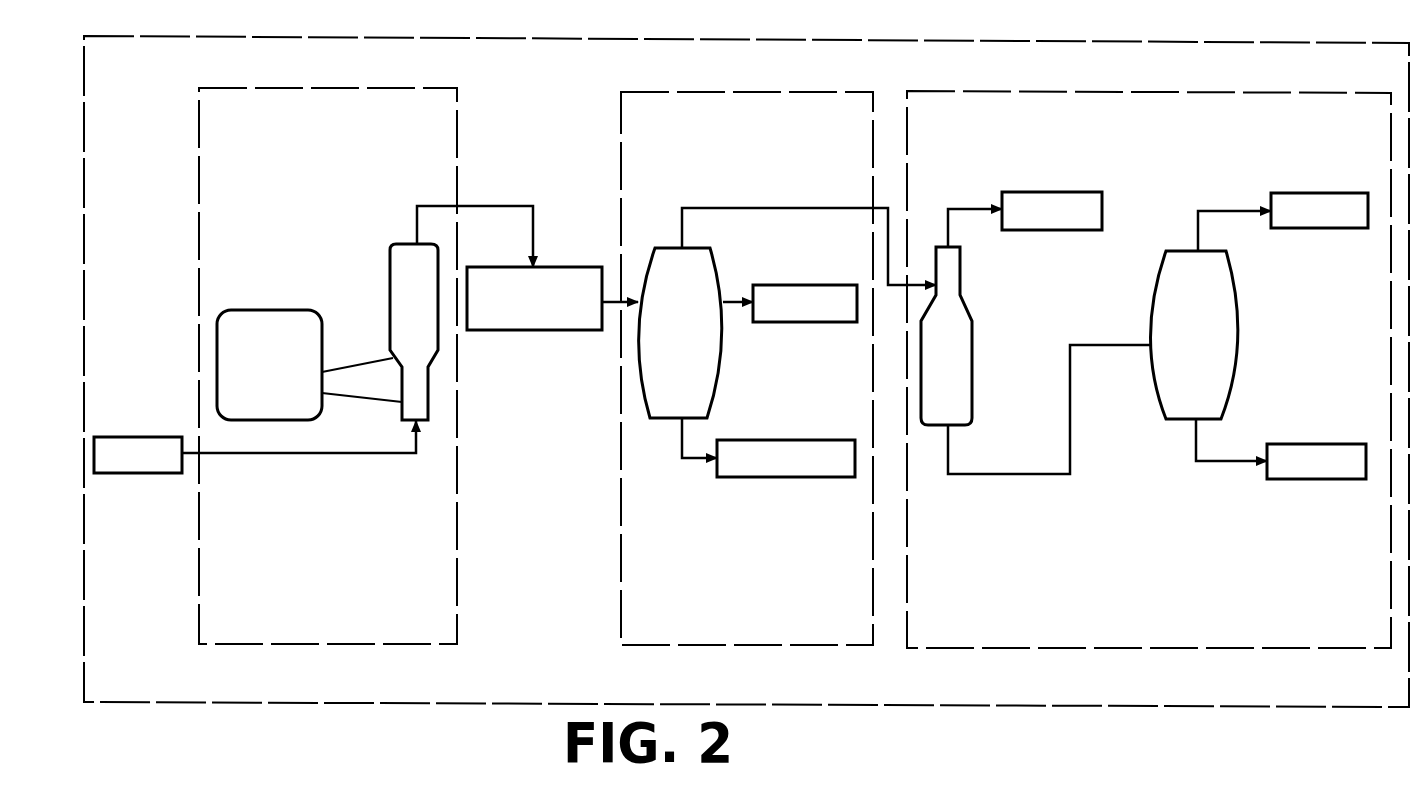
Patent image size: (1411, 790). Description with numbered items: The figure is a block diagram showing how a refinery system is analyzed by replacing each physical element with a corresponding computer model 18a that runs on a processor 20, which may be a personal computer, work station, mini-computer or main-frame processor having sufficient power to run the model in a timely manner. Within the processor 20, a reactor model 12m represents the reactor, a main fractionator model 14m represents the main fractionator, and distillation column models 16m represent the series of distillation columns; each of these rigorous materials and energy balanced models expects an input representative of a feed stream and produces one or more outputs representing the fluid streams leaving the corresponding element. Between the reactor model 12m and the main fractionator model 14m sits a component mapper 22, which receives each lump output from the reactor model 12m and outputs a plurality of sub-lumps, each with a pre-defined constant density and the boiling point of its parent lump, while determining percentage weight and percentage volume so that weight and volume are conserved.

The reactor model 12m is at (455, 492).
The main fractionator model 14m is at (617, 526).
The distillation column models 16m is at (1214, 93).
The computer model 18a is at (559, 468).
The processor 20 is at (1386, 701).
The component mapper 22 is at (483, 330).